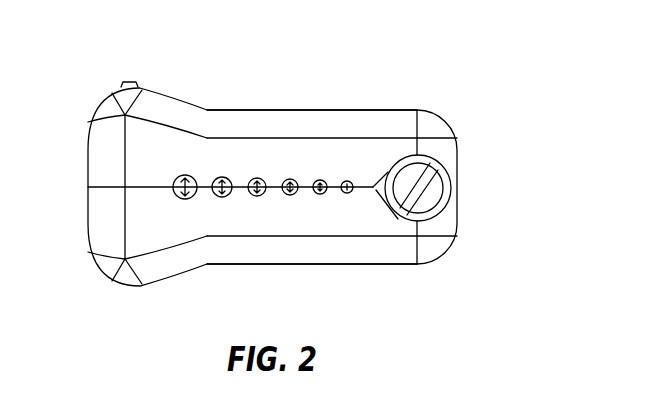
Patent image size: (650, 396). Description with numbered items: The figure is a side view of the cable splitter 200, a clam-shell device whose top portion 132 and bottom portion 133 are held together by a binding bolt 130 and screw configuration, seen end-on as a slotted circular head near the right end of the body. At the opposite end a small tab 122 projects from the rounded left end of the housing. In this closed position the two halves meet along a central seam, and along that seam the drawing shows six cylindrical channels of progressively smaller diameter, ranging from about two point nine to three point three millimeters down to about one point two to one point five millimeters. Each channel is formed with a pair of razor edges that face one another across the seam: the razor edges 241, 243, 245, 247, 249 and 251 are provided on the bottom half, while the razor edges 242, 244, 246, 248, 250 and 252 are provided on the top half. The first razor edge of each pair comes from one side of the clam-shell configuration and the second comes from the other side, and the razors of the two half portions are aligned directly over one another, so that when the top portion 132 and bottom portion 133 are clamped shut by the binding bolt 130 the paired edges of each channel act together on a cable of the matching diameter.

The cable splitter 200 is at (95, 28).
The tab 122 is at (125, 83).
The binding bolt 130 is at (455, 163).
The top portion 132 is at (390, 122).
The bottom portion 133 is at (400, 253).
The razor edge 241 is at (191, 198).
The razor edge 242 is at (176, 178).
The razor edge 243 is at (229, 196).
The razor edge 244 is at (221, 176).
The razor edge 245 is at (262, 195).
The razor edge 246 is at (252, 180).
The razor edge 247 is at (295, 194).
The razor edge 248 is at (285, 181).
The razor edge 249 is at (325, 193).
The razor edge 250 is at (314, 182).
The razor edge 251 is at (351, 192).
The razor edge 252 is at (342, 182).